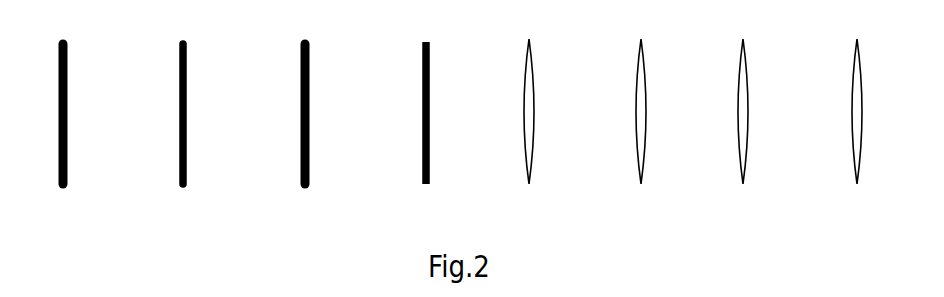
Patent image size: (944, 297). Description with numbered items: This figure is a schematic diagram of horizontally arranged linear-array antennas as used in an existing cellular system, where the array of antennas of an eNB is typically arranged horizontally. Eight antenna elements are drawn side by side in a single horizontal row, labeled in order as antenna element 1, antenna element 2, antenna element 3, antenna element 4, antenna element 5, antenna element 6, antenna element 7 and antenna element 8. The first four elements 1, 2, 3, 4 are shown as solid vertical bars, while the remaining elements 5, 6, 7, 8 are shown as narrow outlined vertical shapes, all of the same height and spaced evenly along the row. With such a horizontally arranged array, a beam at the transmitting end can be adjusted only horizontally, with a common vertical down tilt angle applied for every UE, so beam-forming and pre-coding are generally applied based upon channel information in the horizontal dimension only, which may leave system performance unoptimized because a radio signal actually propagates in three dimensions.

The first linear element 1 is at (62, 134).
The second linear element 2 is at (182, 134).
The third linear element 3 is at (304, 134).
The fourth linear element (dotted) 4 is at (425, 133).
The first elliptical element 5 is at (528, 131).
The second elliptical element 6 is at (640, 131).
The third elliptical element 7 is at (742, 131).
The fourth elliptical element 8 is at (856, 131).